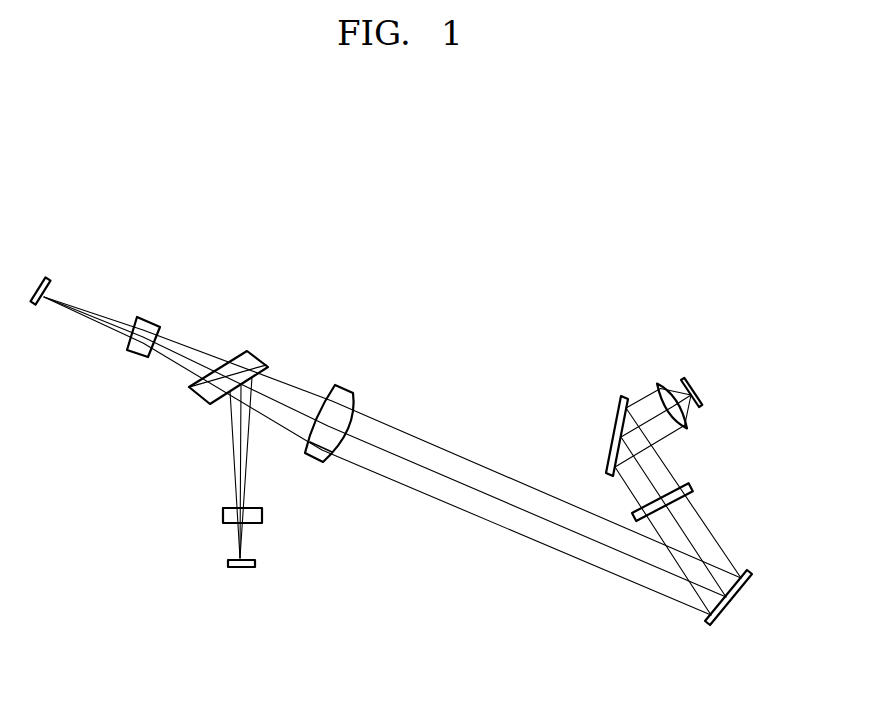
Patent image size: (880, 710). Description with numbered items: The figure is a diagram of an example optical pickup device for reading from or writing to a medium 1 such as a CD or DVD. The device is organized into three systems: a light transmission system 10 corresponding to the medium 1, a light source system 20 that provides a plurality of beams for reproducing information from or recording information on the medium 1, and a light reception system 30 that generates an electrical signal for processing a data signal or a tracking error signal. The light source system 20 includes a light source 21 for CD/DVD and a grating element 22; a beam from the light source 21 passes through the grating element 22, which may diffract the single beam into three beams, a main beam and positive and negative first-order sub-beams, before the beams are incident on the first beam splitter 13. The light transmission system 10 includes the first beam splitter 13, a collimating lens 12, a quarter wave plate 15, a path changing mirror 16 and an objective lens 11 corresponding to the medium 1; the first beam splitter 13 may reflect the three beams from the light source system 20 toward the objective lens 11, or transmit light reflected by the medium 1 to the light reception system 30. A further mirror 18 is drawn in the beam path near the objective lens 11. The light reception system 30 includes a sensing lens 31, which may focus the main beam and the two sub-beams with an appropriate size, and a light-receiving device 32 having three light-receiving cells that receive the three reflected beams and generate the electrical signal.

The medium 1 is at (688, 385).
The light transmission system 10 is at (629, 272).
The objective lens 11 is at (687, 428).
The collimating lens 12 is at (345, 393).
The first beam splitter 13 is at (254, 358).
The quarter wave plate 15 is at (693, 488).
The path changing mirror 16 is at (749, 573).
The reflecting mirror 18 is at (620, 425).
The light source system 20 is at (310, 505).
The light source 21 is at (255, 563).
The grating element 22 is at (262, 512).
The light reception system 30 is at (58, 226).
The sensing lens 31 is at (149, 322).
The light-receiving device 32 is at (47, 278).